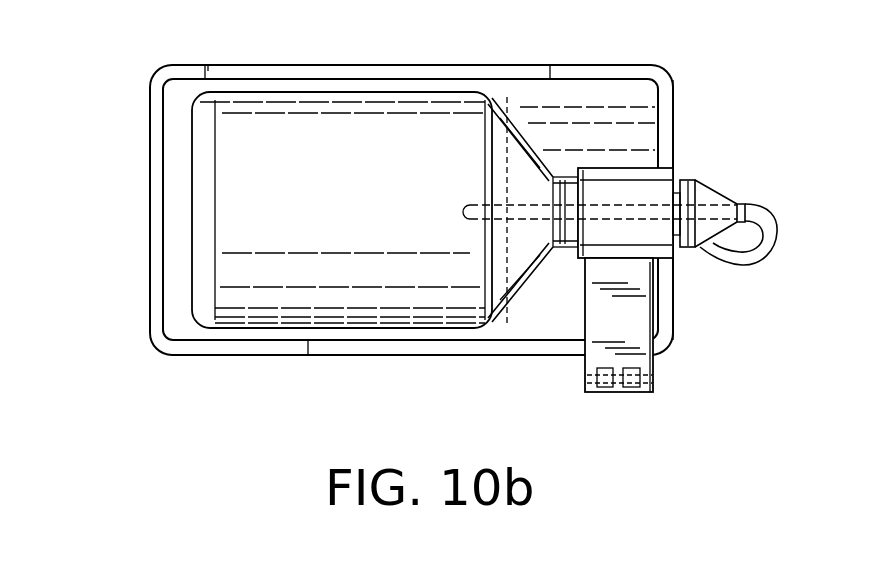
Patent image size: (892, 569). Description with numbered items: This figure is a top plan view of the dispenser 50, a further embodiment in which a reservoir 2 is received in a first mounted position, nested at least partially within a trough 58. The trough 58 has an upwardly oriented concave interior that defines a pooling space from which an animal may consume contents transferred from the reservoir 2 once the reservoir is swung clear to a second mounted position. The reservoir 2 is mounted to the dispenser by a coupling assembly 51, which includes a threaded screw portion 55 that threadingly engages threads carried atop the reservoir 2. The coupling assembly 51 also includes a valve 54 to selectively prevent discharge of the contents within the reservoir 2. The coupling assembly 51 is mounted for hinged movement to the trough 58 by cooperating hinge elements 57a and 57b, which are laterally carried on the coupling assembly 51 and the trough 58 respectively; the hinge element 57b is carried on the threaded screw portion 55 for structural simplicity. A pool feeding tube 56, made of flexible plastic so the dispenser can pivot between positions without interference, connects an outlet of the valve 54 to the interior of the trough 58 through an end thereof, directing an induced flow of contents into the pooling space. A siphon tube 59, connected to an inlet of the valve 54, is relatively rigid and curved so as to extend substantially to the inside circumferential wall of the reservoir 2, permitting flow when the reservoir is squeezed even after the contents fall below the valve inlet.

The reservoir 2 is at (250, 92).
The dispenser 50 is at (120, 371).
The coupling assembly 51 is at (692, 160).
The valve 54 is at (717, 192).
The threaded screw portion 55 is at (629, 168).
The pool feeding tube 56 is at (771, 245).
The hinge element 57a is at (593, 388).
The hinge element 57b is at (604, 388).
The trough 58 is at (601, 67).
The siphon tube 59 is at (483, 80).